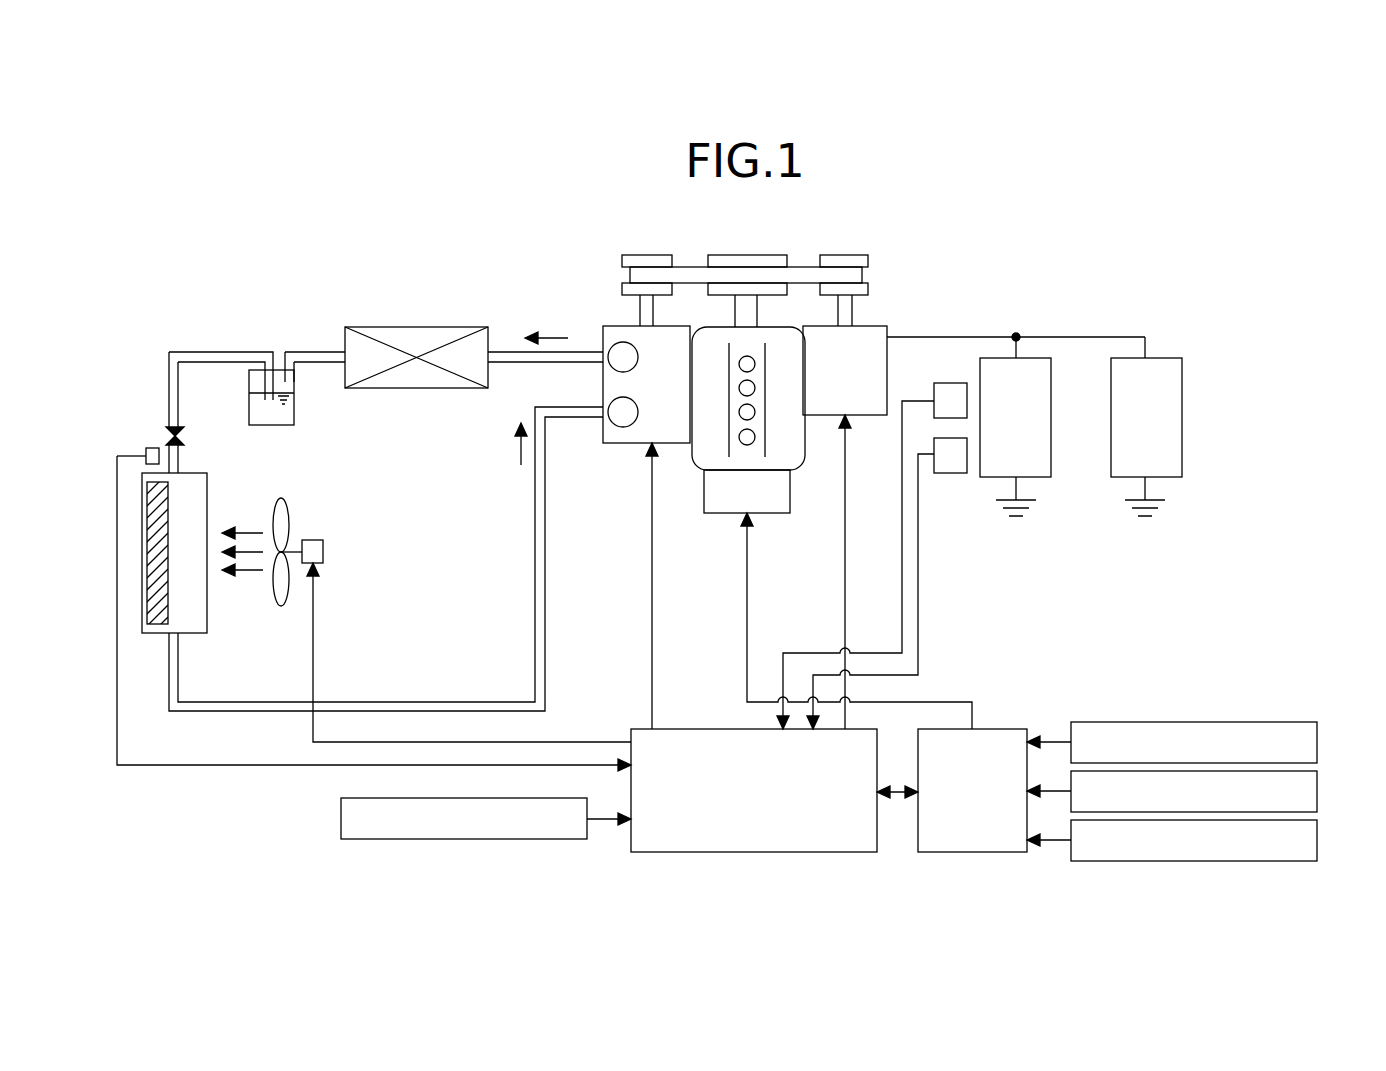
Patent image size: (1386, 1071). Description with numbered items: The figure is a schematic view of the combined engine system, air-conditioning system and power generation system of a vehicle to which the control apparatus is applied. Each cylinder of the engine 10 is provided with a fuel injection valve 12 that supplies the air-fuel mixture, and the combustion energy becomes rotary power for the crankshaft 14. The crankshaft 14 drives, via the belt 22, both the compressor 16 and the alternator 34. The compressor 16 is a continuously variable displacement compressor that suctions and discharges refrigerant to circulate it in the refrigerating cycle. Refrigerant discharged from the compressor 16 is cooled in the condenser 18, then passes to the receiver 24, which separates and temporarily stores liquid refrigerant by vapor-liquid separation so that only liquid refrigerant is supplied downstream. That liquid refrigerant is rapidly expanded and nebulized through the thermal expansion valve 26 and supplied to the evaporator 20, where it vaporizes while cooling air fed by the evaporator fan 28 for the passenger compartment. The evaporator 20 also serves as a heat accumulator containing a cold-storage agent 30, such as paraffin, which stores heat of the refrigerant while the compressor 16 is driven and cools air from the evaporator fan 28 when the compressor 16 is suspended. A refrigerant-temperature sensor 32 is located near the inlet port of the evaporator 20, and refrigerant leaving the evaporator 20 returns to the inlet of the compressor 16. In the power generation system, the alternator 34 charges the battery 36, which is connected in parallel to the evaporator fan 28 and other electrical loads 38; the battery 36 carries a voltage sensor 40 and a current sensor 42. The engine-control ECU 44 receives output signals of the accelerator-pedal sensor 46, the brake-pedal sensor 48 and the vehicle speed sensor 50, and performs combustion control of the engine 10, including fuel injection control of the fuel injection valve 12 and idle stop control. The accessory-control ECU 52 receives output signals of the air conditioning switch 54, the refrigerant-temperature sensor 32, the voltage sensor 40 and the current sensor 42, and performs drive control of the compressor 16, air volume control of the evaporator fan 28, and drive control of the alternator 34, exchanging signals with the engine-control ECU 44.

The engine 10 is at (694, 471).
The fuel injection valve 12 is at (708, 514).
The crankshaft 14 is at (758, 305).
The compressor 16 is at (613, 444).
The condenser 18 is at (422, 389).
The evaporator 20 is at (196, 634).
The belt 22 is at (694, 257).
The receiver 24 is at (272, 426).
The thermal expansion valve 26 is at (167, 430).
The evaporator fan 28 is at (324, 551).
The cold-storage agent 30 is at (157, 625).
The refrigerant-temperature sensor 32 is at (146, 452).
The alternator 34 is at (882, 326).
The battery 36 is at (1041, 477).
The electrical load 38 is at (1173, 477).
The voltage sensor 40 is at (945, 383).
The current sensor 42 is at (950, 473).
The engine-control ECU 44 is at (968, 853).
The accelerator-pedal sensor 46 is at (1319, 745).
The brake-pedal sensor 48 is at (1319, 794).
The vehicle speed sensor 50 is at (1319, 843).
The accessory-control ECU 52 is at (752, 853).
The air conditioning switch 54 is at (340, 818).